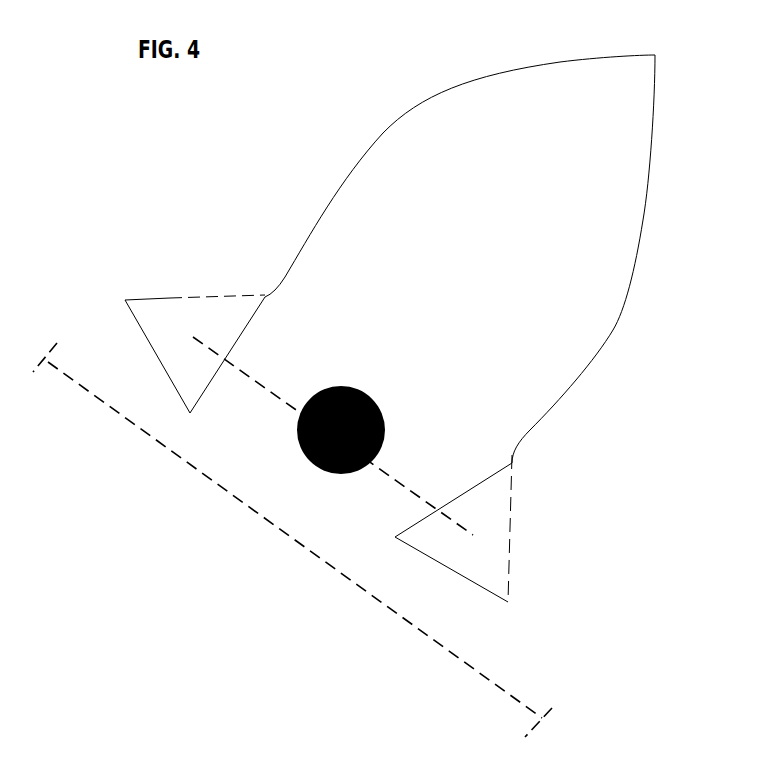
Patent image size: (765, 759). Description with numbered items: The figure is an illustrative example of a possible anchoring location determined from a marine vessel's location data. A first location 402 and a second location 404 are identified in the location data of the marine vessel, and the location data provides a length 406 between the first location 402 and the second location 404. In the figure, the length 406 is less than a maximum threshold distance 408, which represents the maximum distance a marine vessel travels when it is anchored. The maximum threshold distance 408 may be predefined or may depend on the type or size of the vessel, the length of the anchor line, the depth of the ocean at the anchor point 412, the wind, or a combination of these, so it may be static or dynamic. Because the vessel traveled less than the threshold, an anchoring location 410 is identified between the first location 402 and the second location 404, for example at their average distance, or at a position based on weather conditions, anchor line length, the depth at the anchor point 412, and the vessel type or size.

The first location 402 is at (170, 298).
The second location 404 is at (510, 535).
The length 406 is at (240, 368).
The maximum threshold distance 408 is at (250, 505).
The anchoring location 410 is at (373, 460).
The anchor point 412 is at (655, 55).